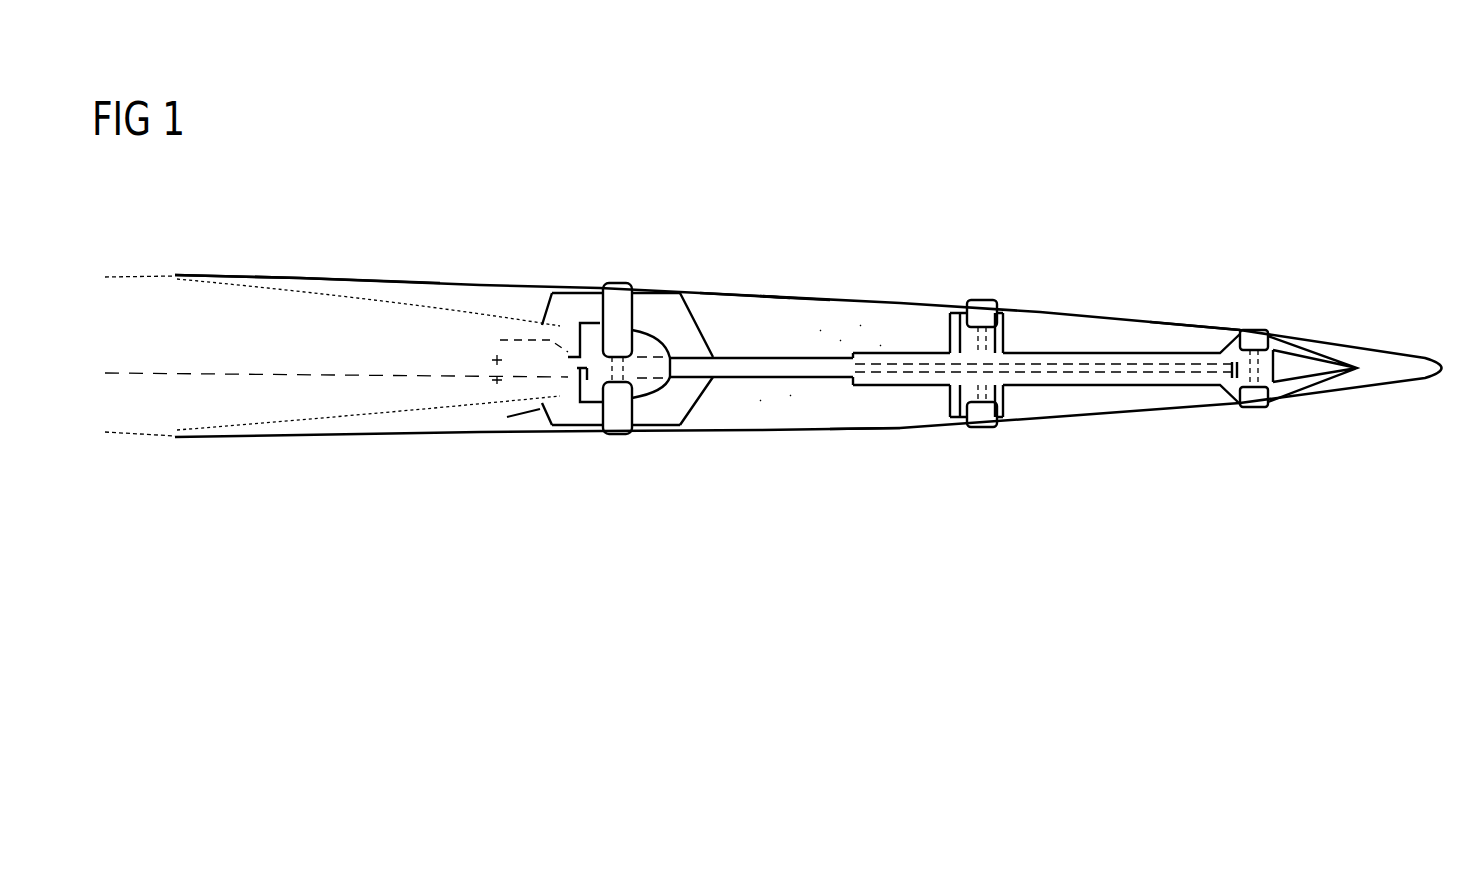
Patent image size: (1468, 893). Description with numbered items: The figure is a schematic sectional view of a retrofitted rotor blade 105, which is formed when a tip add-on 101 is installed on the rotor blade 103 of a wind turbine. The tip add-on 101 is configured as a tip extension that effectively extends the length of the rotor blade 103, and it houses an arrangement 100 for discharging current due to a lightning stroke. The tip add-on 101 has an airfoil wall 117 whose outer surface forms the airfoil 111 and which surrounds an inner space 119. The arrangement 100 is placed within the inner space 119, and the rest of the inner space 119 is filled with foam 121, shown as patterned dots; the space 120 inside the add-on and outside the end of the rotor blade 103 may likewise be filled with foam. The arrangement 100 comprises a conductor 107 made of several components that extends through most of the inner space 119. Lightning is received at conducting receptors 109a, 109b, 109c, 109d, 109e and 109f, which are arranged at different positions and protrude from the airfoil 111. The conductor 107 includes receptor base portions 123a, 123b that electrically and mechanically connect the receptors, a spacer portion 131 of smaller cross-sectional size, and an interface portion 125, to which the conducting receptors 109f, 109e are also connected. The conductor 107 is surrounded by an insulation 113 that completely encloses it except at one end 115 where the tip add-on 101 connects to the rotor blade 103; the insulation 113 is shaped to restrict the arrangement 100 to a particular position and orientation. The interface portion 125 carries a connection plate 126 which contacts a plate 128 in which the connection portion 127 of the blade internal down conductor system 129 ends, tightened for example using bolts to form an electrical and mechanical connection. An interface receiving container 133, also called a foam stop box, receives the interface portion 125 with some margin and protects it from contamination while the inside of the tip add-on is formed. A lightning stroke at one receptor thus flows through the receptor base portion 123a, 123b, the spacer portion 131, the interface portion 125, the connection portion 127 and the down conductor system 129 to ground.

The arrangement 100 is at (855, 430).
The tip add-on 101 is at (1198, 316).
The rotor blade 103 is at (153, 276).
The retrofitted rotor blade 105 is at (1118, 212).
The conductor 107 is at (903, 362).
The conducting receptor 109a is at (980, 300).
The conducting receptor 109b is at (1255, 330).
The conducting receptor 109c is at (1258, 408).
The conducting receptor 109d is at (980, 428).
The conducting receptor 109e is at (617, 440).
The conducting receptor 109f is at (618, 292).
The airfoil 111 is at (774, 295).
The insulation 113 is at (1140, 350).
The end 115 is at (552, 255).
The airfoil wall 117 is at (762, 295).
The inner space 119 is at (832, 320).
The space 120 is at (440, 293).
The foam 121 is at (502, 300).
The receptor base portion 123a is at (1035, 314).
The receptor base portion 123b is at (1232, 386).
The interface portion 125 is at (526, 432).
The connection plate 126 is at (592, 410).
The connection portion 127 is at (497, 355).
The plate 128 is at (670, 298).
The blade internal down conductor system 129 is at (262, 373).
The spacer portion 131 is at (783, 400).
The interface receiving container 133 is at (700, 400).